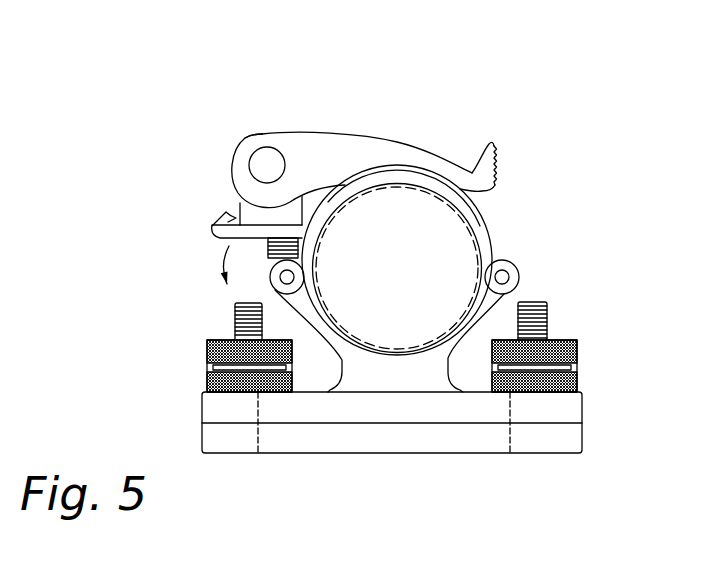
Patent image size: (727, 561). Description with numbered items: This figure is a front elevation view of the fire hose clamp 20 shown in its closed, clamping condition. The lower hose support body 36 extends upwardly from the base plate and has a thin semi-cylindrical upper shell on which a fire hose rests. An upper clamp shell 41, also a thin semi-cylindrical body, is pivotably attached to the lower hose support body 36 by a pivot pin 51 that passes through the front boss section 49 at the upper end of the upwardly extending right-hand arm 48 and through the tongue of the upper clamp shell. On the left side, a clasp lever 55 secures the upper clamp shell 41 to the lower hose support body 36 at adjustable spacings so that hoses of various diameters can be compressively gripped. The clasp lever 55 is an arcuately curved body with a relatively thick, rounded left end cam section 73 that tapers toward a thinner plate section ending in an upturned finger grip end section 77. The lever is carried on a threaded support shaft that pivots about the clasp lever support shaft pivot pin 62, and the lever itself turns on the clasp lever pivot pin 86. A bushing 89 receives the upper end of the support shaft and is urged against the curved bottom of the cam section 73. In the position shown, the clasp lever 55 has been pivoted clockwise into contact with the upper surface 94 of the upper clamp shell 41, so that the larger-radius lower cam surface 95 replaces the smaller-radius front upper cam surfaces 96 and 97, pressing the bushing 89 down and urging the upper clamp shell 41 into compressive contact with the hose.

The fire hose clamp 20 is at (495, 98).
The lower hose support body 36 is at (398, 383).
The upper clamp shell 41 is at (488, 222).
The right-hand arm 48 is at (471, 332).
The front boss section 49 is at (505, 292).
The pivot pin 51 is at (502, 277).
The clasp lever 55 is at (392, 144).
The clasp lever support shaft pivot pin 62 is at (287, 277).
The left end cam section 73 is at (243, 150).
The finger grip end section 77 is at (497, 150).
The clasp lever pivot pin 86 is at (268, 163).
The bushing 89 is at (232, 208).
The upper surface 94 is at (433, 173).
The lower cam surface 95 is at (214, 230).
The front upper cam surface 96 is at (232, 165).
The front upper cam surface 97 is at (262, 135).